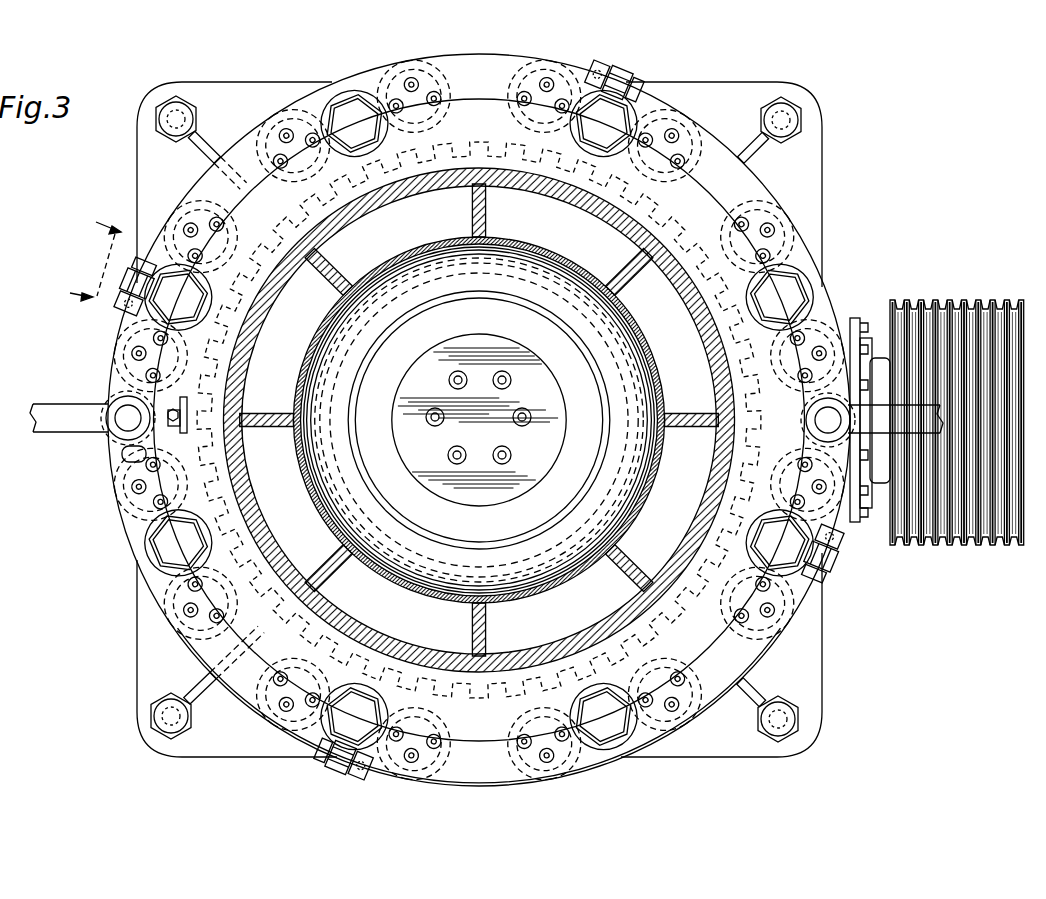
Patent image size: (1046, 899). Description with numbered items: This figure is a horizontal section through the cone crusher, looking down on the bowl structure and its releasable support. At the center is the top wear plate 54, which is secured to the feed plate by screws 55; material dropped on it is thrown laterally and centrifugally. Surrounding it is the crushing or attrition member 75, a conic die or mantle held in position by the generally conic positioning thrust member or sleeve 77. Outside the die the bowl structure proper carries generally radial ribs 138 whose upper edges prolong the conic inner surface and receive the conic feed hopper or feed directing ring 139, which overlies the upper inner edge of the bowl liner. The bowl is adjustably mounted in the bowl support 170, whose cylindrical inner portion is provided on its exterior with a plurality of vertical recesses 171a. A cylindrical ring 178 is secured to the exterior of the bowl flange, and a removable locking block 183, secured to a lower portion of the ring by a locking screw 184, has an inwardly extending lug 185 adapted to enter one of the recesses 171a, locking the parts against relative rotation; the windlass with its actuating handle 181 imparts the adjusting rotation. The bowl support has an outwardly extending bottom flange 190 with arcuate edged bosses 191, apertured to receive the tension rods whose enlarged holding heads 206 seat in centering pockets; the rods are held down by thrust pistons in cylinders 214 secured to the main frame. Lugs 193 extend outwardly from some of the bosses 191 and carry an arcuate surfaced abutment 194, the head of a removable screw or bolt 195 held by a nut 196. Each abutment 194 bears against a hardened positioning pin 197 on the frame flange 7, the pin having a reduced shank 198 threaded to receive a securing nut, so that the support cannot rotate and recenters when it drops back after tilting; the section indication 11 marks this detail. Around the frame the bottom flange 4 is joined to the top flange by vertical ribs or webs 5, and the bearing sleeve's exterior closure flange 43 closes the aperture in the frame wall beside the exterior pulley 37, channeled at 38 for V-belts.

The bottom flange 4 is at (193, 98).
The vertical ribs or webs 5 is at (200, 146).
The flange 7 is at (478, 780).
The Figure 11 section indication 11 is at (79, 258).
The exterior pulley 37 is at (957, 404).
The channels 38 is at (960, 300).
The exterior closure flange 43 is at (856, 318).
The top wear plate 54 is at (474, 346).
The screws 55 is at (524, 412).
The crushing or attrition member 75 is at (597, 365).
The positioning thrust member or sleeve 77 is at (577, 362).
The radial ribs 138 is at (476, 214).
The conic feed hopper or feed directing ring 139 is at (662, 386).
The bowl support 170 is at (216, 453).
The vertical recesses 171a is at (546, 150).
The cylindrical ring 178 is at (240, 648).
The actuating handle 181 is at (50, 412).
The removable locking block 183 is at (182, 412).
The locking screw 184 is at (170, 428).
The inwardly extending lug 185 is at (240, 410).
The bottom flange 190 is at (256, 193).
The arcuate edged bosses 191 is at (346, 103).
The lugs 193 is at (646, 96).
The arcuate surfaced abutment 194 is at (634, 88).
The removable screw or bolt 195 is at (658, 104).
The nut 196 is at (652, 100).
The positioning pin 197 is at (602, 78).
The reduced shank 198 is at (622, 84).
The holding heads 206 is at (361, 108).
The cylinders 214 is at (288, 122).